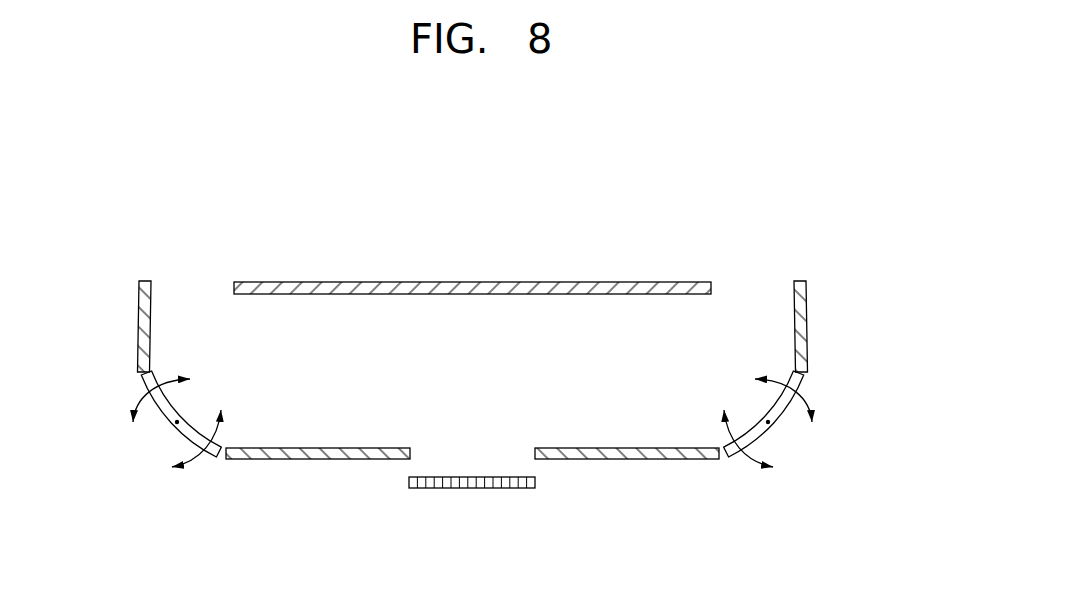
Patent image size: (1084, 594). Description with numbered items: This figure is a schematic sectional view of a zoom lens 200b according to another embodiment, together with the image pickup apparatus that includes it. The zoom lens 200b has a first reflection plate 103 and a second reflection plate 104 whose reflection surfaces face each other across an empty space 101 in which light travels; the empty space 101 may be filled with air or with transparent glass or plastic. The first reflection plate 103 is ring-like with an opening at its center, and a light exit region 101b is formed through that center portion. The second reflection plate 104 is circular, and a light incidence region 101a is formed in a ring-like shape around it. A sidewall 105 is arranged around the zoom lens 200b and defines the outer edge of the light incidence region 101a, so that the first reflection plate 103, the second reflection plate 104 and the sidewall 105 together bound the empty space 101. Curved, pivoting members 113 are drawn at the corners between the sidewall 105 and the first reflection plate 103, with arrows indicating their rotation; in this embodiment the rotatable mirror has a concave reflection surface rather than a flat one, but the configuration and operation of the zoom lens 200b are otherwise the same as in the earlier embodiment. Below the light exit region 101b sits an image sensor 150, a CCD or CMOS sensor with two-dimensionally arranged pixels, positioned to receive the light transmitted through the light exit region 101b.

The empty space 101 is at (488, 359).
The light incidence region 101a is at (745, 287).
The light exit region 101b is at (437, 450).
The first reflection plate 103 is at (625, 457).
The second reflection plate 104 is at (477, 290).
The sidewall 105 is at (805, 320).
The hinge member 113 is at (782, 408).
The image sensor 150 is at (477, 485).
The zoom lens 200b is at (823, 200).